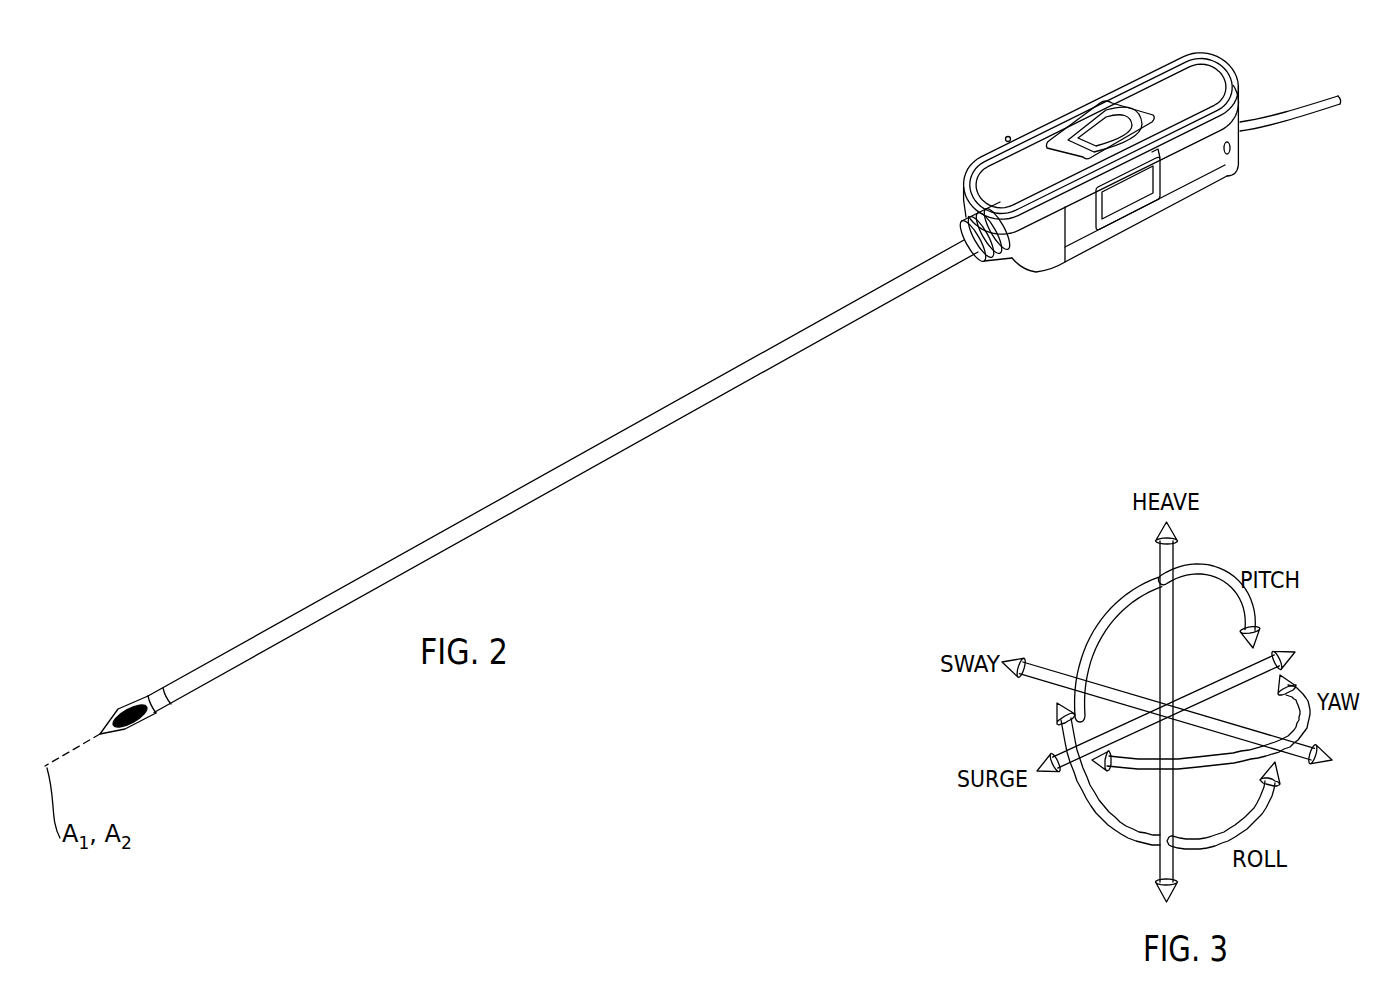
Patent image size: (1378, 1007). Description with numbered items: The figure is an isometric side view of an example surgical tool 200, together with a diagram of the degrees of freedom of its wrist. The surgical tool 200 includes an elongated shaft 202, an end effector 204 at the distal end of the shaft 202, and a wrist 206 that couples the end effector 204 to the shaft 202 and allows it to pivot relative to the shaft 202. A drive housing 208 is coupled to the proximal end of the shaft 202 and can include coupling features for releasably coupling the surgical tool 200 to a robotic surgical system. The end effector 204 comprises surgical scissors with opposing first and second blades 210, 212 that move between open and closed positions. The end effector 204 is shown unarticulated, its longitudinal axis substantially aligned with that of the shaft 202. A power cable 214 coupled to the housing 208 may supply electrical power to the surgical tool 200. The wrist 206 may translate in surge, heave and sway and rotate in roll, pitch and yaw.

The surgical tool 200 is at (679, 200).
The elongated shaft 202 is at (602, 444).
The end effector 204 is at (122, 684).
The wrist 206 is at (150, 728).
The drive housing 208 is at (1015, 138).
The first blade 210 is at (107, 729).
The second blade 212 is at (108, 738).
The power cable 214 is at (1315, 118).